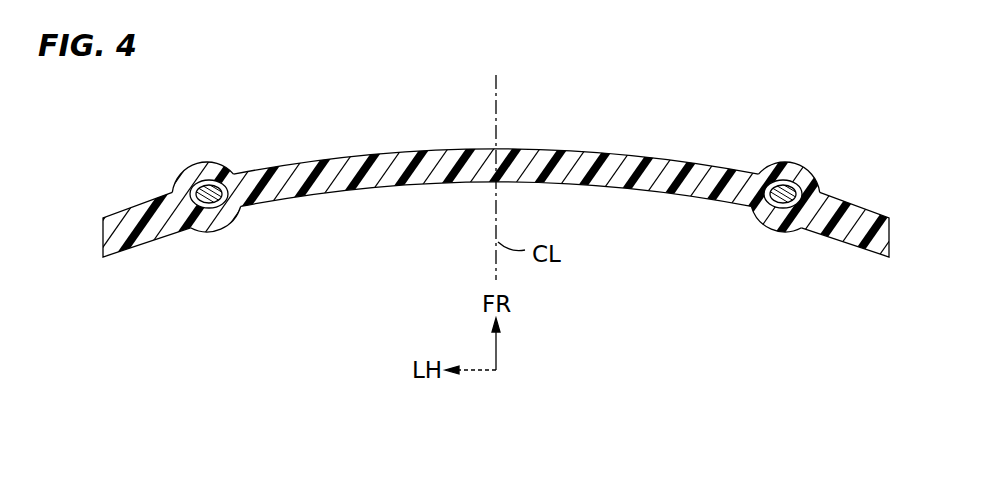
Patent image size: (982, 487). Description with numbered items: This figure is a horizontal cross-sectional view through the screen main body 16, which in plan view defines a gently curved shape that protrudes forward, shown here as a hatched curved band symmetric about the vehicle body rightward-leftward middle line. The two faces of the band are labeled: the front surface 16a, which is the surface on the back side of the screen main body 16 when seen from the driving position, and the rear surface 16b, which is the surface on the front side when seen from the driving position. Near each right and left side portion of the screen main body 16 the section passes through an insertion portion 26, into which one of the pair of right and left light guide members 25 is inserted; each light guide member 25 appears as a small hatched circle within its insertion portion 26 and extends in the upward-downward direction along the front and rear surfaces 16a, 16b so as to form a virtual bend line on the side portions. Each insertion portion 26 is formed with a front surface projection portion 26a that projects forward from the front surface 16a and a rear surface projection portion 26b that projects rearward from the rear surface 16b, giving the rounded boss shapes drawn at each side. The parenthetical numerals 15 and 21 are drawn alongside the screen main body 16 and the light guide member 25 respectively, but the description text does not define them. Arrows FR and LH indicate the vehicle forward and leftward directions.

The vehicle body frame member 15 is at (492, 172).
The screen main body 16 is at (492, 172).
The front surface 16a is at (562, 157).
The rear surface 16b is at (606, 186).
The fastening member 21 is at (515, 262).
The light guide member 25 is at (210, 208).
The insertion portion 26 is at (492, 192).
The front surface projection portion 26a is at (208, 163).
The rear surface projection portion 26b is at (230, 226).